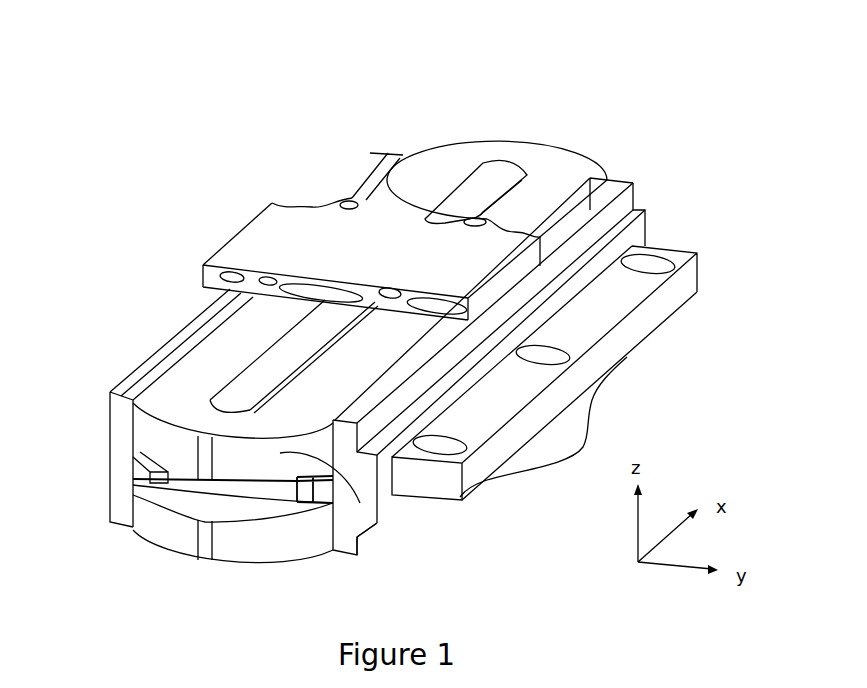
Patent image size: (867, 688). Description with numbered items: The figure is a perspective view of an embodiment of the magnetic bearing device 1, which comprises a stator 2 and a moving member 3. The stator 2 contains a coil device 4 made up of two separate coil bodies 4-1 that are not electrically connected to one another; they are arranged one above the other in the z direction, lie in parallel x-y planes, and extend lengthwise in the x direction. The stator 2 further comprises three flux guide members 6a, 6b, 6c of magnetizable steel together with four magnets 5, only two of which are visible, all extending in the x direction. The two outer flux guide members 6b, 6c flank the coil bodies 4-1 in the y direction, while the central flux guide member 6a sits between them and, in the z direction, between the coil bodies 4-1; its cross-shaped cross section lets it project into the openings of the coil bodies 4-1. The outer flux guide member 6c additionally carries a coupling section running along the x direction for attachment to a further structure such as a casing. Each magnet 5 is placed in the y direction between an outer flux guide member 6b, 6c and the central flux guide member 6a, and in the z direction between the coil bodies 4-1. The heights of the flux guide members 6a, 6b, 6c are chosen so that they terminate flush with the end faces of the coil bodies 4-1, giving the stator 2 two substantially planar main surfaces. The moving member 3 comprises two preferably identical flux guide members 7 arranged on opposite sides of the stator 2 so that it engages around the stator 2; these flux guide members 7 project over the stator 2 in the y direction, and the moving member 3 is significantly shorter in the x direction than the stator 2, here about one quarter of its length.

The magnetic bearing device 1 is at (213, 70).
The stator 2 is at (82, 381).
The moving member 3 is at (487, 262).
The coil device 4 is at (338, 505).
The coil bodies 4-1 is at (355, 527).
The magnets 5 is at (333, 487).
The central flux guide member 6a is at (527, 172).
The outer flux guide member 6b is at (386, 150).
The outer flux guide member 6c is at (607, 178).
The flux guide members 7 is at (543, 350).